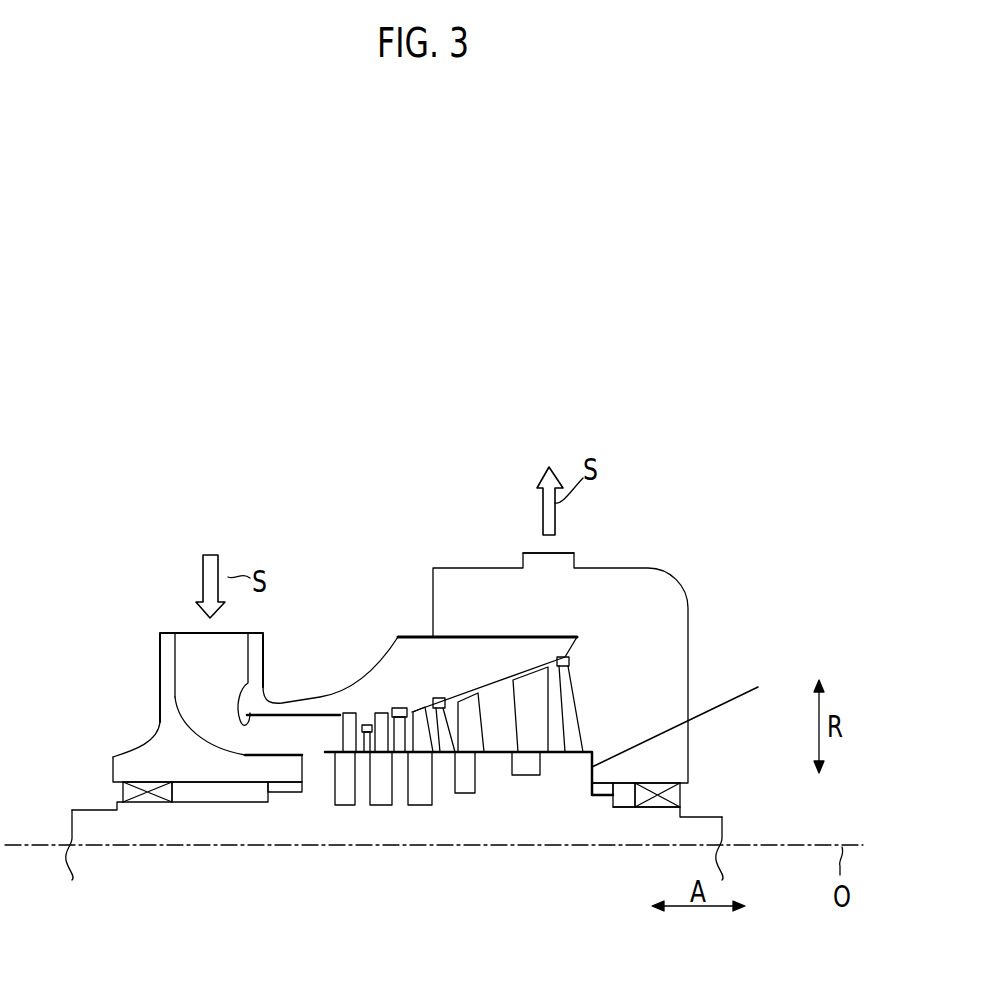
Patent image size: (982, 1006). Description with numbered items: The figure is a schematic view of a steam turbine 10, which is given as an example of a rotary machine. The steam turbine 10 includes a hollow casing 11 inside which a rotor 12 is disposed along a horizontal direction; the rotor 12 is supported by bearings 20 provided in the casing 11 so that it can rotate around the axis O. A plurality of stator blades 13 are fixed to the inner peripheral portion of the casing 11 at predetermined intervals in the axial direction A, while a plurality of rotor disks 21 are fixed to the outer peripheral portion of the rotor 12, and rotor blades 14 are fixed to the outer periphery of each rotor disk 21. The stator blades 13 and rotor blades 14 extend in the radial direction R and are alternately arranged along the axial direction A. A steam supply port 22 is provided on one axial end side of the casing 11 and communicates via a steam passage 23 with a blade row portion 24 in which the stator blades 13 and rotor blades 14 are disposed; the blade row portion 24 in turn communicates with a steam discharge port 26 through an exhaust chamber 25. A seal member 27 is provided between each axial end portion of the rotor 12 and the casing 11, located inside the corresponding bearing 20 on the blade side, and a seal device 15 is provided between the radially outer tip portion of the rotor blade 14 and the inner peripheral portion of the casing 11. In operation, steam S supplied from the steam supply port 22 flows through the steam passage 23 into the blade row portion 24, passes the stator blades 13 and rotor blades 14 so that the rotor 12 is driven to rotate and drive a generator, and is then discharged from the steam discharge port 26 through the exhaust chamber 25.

The steam turbine 10 is at (381, 572).
The casing 11 is at (170, 735).
The rotor 12 is at (368, 830).
The stator blade 13 is at (430, 778).
The rotor blade 14 is at (365, 722).
The seal device 15 is at (394, 708).
The bearing 20 is at (147, 795).
The rotor disk 21 is at (362, 775).
The steam supply port 22 is at (190, 645).
The steam passage 23 is at (300, 723).
The blade row portion 24 is at (575, 637).
The exhaust chamber 25 is at (675, 673).
The steam discharge port 26 is at (570, 553).
The seal member 27 is at (285, 790).